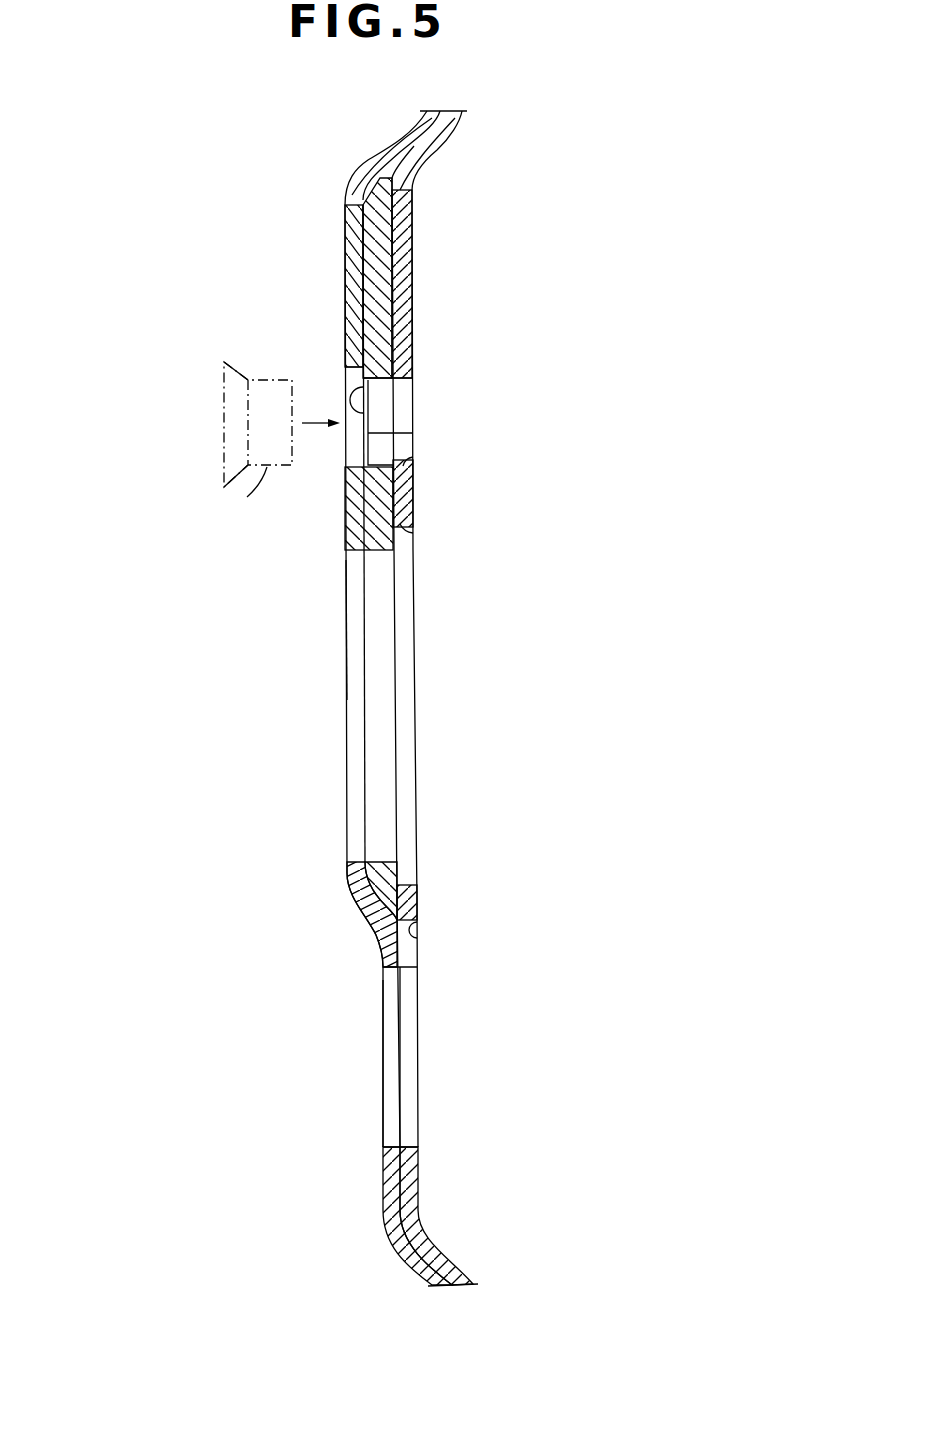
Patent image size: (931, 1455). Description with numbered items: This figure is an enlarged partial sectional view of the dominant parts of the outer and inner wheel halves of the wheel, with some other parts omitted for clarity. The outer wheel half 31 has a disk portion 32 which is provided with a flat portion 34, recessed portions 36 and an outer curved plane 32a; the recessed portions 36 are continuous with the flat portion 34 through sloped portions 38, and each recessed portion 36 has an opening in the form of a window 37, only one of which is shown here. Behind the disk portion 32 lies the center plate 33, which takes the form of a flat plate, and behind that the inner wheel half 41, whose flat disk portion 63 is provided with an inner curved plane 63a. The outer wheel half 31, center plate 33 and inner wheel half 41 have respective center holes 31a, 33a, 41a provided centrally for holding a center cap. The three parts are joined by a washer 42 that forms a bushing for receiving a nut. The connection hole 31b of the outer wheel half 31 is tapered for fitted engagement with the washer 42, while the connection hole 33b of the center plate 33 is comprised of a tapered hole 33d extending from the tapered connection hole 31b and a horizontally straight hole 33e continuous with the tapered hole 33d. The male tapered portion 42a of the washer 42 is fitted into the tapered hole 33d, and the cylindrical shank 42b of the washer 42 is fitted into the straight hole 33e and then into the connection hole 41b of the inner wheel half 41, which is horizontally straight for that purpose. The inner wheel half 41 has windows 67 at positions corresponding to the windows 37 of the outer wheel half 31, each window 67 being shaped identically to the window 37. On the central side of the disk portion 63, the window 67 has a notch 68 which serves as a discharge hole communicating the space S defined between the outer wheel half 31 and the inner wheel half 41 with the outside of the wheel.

The outer wheel half 31 is at (355, 168).
The center hole 31a is at (347, 575).
The connection hole 31b is at (352, 368).
The disk portion 32 is at (343, 217).
The outer curved plane 32a is at (413, 134).
The center plate 33 is at (382, 262).
The center hole 33a is at (380, 545).
The connection hole 33b is at (381, 395).
The tapered hole 33d is at (413, 433).
The horizontally straight hole 33e is at (393, 381).
The flat portion 34 is at (343, 273).
The recessed portion 36 is at (383, 1170).
The window 37 is at (398, 1146).
The sloped portion 38 is at (357, 910).
The inner wheel half 41 is at (462, 140).
The center hole 41a is at (405, 533).
The connection hole 41b is at (413, 455).
The washer 42 is at (212, 423).
The male tapered portion 42a is at (230, 362).
The cylindrical shank 42b is at (226, 486).
The flat disk portion 63 is at (415, 220).
The inner curved plane 63a is at (443, 146).
The window 67 is at (410, 1146).
The notch 68 is at (418, 938).
The space S is at (387, 920).